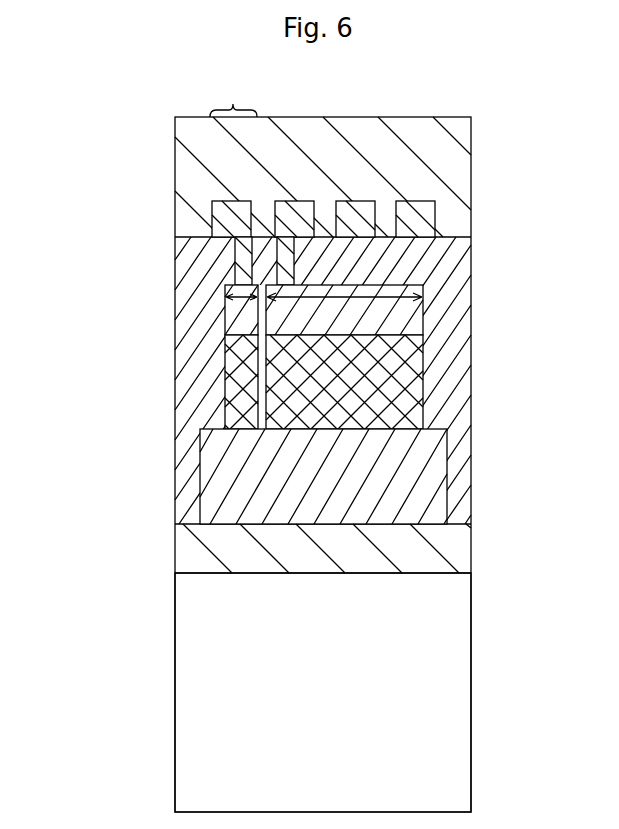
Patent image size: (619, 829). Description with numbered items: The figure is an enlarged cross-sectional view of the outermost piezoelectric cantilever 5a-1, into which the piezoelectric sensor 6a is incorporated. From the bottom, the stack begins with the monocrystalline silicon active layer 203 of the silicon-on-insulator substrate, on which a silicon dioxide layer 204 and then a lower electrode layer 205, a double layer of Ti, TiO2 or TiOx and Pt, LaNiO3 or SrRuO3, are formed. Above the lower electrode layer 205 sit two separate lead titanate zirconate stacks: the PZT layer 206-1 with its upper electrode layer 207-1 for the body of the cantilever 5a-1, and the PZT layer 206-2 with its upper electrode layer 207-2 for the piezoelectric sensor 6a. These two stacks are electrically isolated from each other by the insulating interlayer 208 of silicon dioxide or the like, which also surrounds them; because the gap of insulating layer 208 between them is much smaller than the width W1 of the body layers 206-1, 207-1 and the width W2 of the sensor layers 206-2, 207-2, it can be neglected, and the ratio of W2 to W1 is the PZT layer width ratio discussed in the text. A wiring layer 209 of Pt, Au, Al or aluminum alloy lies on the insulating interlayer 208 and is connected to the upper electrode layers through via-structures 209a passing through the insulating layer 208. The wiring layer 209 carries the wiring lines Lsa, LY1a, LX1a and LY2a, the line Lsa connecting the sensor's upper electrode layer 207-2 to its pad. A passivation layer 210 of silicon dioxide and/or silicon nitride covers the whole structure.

The outermost piezoelectric cantilever 5a-1 is at (474, 86).
The passivation layer 210 is at (188, 163).
The wiring layer 209 is at (213, 217).
The via-structure 209a is at (243, 262).
The insulating interlayer 208 is at (192, 258).
The upper electrode layer for the piezoelectric sensor 207-2 is at (233, 325).
The upper electrode layer for the body of the cantilever 207-1 is at (410, 320).
The PZT layer for the piezoelectric sensor 206-2 is at (233, 372).
The PZT layer for the body of the cantilever 206-1 is at (400, 370).
The lower electrode layer 205 is at (228, 470).
The silicon dioxide layer 204 is at (195, 548).
The monocrystalline silicon active layer 203 is at (200, 637).
The width of the PZT layer of the cantilever body W1 is at (408, 298).
The width of the PZT layer of the piezoelectric sensor W2 is at (239, 302).
The piezoelectric sensor 6a is at (233, 101).
The wiring line Lsa is at (238, 201).
The wiring line LY1a is at (297, 201).
The wiring line LX1a is at (357, 201).
The wiring line LY2a is at (419, 201).